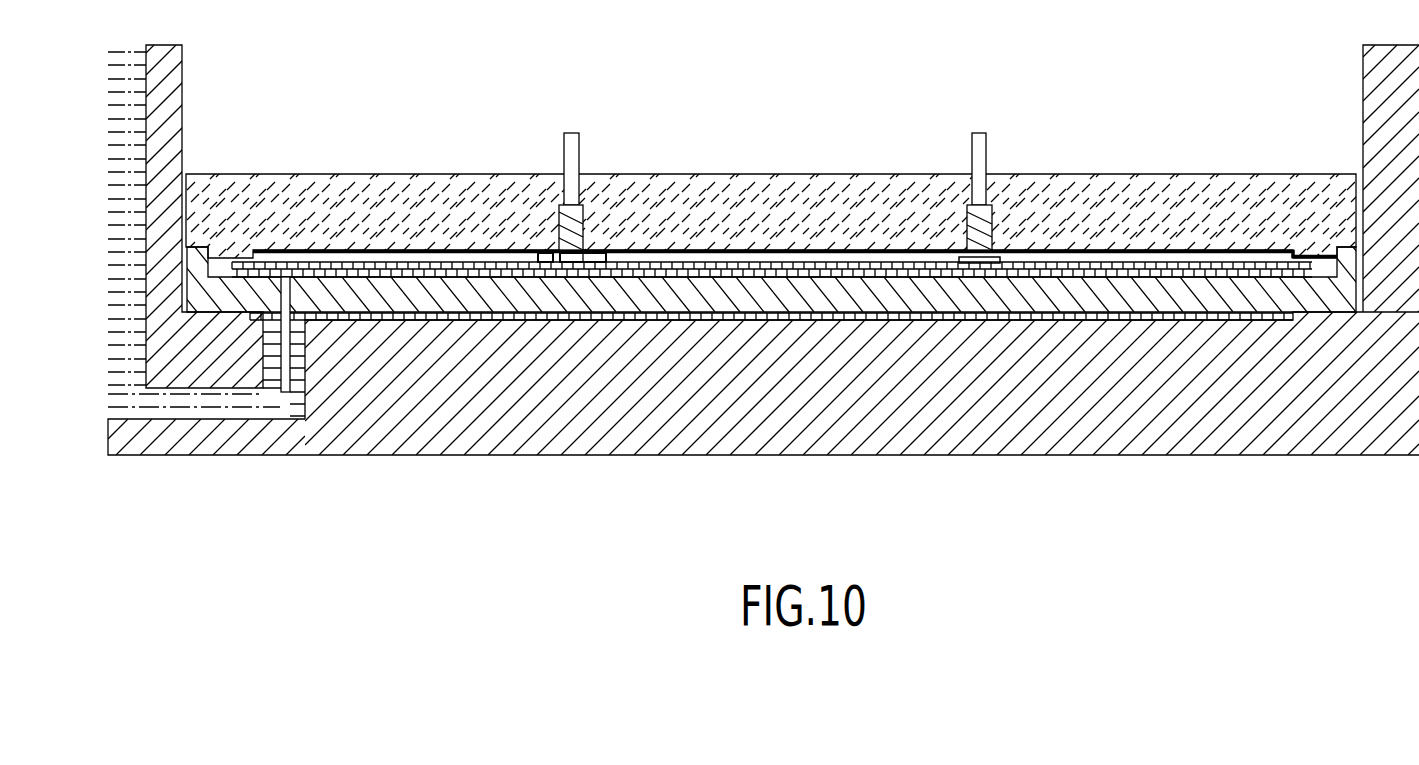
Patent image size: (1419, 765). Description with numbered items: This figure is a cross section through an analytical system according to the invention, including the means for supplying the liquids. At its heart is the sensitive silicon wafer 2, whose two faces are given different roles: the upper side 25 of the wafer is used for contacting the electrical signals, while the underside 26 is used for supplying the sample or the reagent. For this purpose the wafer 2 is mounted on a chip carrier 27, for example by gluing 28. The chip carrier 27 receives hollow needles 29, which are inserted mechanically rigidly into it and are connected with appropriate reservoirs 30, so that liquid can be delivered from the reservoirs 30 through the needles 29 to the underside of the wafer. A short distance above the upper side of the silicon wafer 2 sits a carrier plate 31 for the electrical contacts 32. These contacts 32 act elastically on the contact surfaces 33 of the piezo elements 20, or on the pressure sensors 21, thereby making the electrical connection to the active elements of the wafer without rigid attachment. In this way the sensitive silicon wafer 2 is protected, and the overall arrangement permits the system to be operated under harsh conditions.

The silicon wafer 2 is at (1165, 268).
The piezo elements 20 is at (590, 255).
The pressure sensors 21 is at (992, 258).
The upper side 25 is at (386, 262).
The underside 26 is at (402, 273).
The chip carrier 27 is at (648, 302).
The gluing 28 is at (832, 277).
The hollow needles 29 is at (287, 392).
The reservoirs 30 is at (180, 400).
The carrier plate 31 is at (787, 174).
The electrical contacts 32 is at (570, 132).
The contact surfaces 33 is at (548, 255).